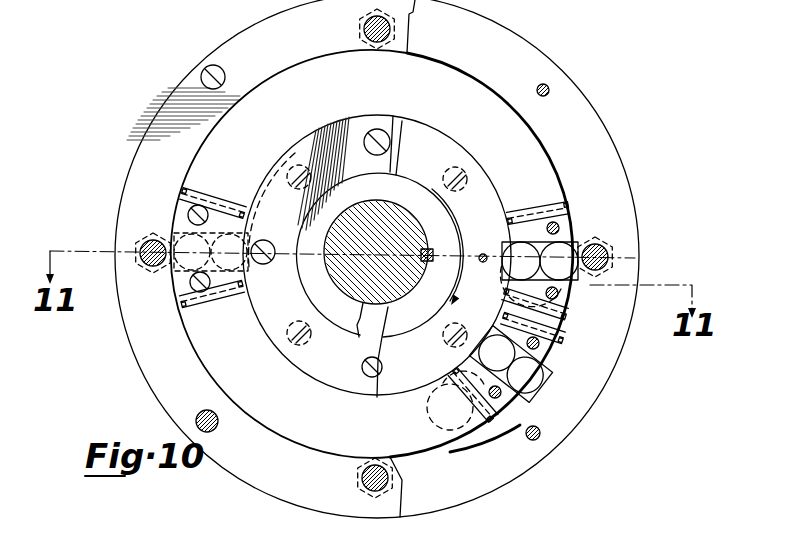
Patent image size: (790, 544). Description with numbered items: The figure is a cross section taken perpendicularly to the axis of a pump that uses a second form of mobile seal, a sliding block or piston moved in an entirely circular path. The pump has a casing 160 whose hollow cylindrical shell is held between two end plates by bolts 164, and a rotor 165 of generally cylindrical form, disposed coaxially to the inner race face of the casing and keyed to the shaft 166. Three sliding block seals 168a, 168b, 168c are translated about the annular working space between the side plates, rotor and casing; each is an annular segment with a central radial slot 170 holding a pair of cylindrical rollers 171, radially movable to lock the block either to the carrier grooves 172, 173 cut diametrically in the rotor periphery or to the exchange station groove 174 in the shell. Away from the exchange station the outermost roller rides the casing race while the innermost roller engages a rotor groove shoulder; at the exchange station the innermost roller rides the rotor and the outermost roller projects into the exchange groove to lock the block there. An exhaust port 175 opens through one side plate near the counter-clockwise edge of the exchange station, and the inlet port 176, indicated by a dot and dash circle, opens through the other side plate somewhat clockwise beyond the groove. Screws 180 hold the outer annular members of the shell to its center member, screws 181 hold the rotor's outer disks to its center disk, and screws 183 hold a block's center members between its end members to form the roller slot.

The casing 160 is at (158, 405).
The bolts 164 is at (370, 482).
The rotor 165 is at (306, 368).
The shaft 166 is at (359, 336).
The sliding block seal 168a is at (573, 220).
The sliding block seal 168b is at (503, 408).
The sliding block seal 168c is at (178, 292).
The central radial slot 170 is at (160, 230).
The cylindrical rollers 171 is at (229, 236).
The carrier groove 172 is at (500, 296).
The carrier groove 173 is at (283, 165).
The exchange station groove 174 is at (563, 352).
The exhaust port 175 is at (580, 235).
The inlet port 176 is at (447, 424).
The screws 180 is at (207, 432).
The screws 181 is at (385, 132).
The screws 183 is at (198, 292).